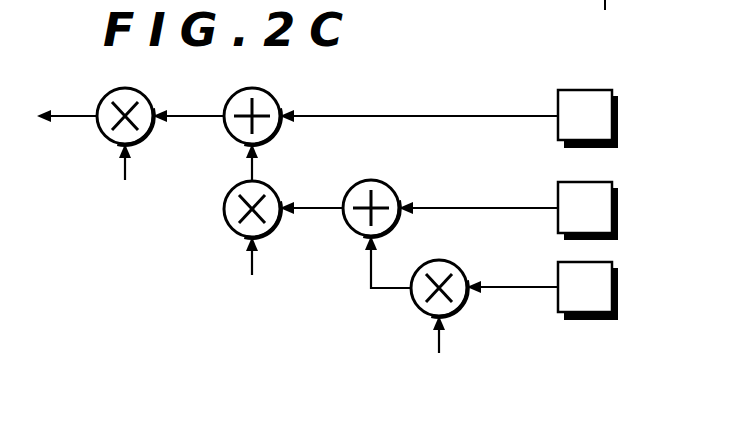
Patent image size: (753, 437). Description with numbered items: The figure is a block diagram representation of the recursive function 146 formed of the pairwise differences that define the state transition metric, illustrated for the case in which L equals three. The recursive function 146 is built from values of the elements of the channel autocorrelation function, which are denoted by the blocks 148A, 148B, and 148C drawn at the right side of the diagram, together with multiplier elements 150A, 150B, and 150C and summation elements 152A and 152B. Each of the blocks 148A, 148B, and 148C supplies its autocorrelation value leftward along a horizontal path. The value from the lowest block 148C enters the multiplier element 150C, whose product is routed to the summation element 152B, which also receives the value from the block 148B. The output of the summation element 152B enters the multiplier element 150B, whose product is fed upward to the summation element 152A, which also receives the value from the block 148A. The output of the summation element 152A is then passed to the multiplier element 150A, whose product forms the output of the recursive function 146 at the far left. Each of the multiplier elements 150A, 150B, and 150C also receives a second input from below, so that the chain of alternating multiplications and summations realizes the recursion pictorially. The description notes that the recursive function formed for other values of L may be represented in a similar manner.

The recursive function 146 is at (456, 76).
The channel autocorrelation function element block 148A is at (618, 118).
The channel autocorrelation function element block 148B is at (618, 209).
The channel autocorrelation function element block 148C is at (618, 288).
The multiplier element 150A is at (110, 92).
The multiplier element 150B is at (232, 190).
The multiplier element 150C is at (455, 266).
The summation element 152A is at (271, 94).
The summation element 152B is at (391, 190).